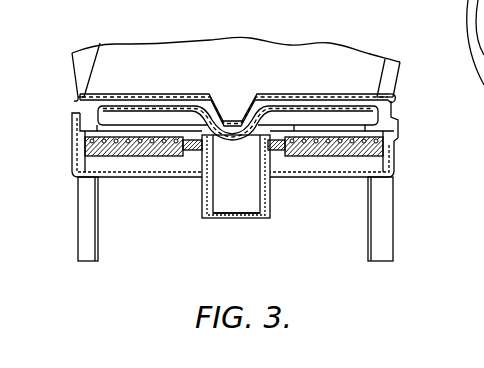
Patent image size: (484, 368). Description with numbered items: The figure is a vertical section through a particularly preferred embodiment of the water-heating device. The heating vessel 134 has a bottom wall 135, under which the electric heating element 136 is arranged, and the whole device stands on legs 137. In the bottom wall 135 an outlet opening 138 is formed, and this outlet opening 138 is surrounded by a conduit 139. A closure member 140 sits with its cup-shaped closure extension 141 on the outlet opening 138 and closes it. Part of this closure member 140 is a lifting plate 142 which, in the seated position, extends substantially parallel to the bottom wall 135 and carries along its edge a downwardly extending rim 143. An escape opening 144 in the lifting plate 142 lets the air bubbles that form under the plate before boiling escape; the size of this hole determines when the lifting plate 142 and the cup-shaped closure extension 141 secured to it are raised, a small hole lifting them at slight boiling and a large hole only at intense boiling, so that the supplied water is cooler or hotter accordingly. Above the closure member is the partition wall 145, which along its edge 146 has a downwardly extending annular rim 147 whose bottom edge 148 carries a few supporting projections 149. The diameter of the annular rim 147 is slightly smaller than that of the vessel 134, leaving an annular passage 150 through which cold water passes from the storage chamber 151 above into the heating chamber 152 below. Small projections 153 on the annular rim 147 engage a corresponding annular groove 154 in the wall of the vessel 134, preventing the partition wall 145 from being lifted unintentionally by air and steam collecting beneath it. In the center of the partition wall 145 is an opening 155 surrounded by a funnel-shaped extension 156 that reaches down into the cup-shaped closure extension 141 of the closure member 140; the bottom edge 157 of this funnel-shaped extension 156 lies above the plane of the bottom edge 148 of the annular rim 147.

The heating vessel 134 is at (399, 63).
The bottom wall 135 is at (395, 148).
The electric heating element 136 is at (378, 157).
The legs 137 is at (88, 233).
The outlet opening 138 is at (228, 150).
The conduit 139 is at (262, 208).
The closure member 140 is at (312, 105).
The cup-shaped closure extension 141 is at (242, 142).
The lifting plate 142 is at (339, 110).
The downwardly extending rim 143 is at (366, 97).
The escape opening 144 is at (312, 99).
The partition wall 145 is at (118, 78).
The edge 146 is at (103, 39).
The annular rim 147 is at (75, 114).
The bottom edge 148 is at (73, 143).
The supporting projections 149 is at (180, 130).
The annular passage 150 is at (399, 125).
The storage chamber 151 is at (385, 80).
The heating chamber 152 is at (171, 94).
The small projections 153 is at (399, 100).
The annular groove 154 is at (72, 99).
The opening 155 is at (232, 99).
The funnel-shaped extension 156 is at (222, 96).
The bottom edge 157 is at (248, 112).